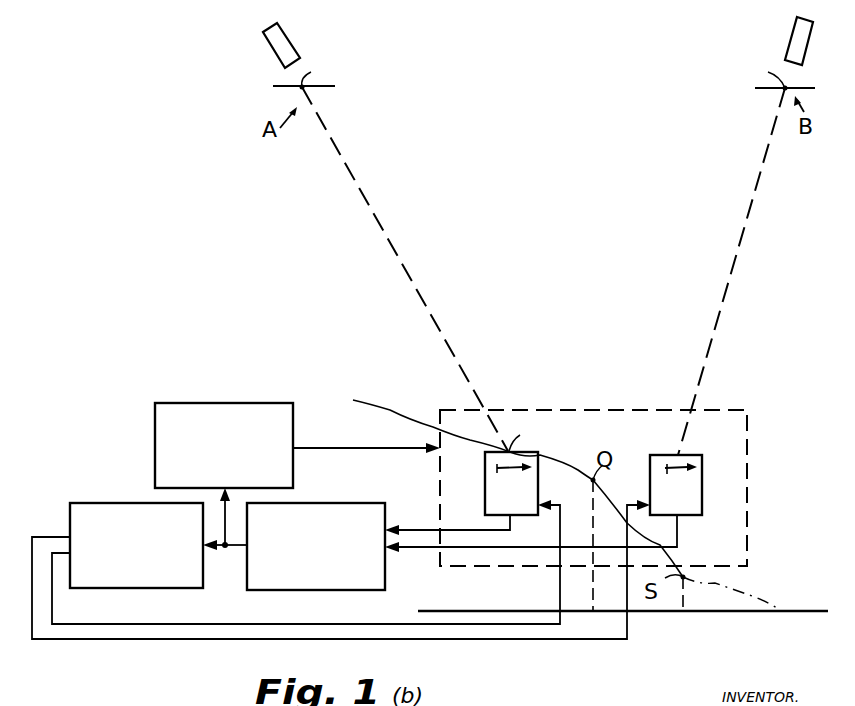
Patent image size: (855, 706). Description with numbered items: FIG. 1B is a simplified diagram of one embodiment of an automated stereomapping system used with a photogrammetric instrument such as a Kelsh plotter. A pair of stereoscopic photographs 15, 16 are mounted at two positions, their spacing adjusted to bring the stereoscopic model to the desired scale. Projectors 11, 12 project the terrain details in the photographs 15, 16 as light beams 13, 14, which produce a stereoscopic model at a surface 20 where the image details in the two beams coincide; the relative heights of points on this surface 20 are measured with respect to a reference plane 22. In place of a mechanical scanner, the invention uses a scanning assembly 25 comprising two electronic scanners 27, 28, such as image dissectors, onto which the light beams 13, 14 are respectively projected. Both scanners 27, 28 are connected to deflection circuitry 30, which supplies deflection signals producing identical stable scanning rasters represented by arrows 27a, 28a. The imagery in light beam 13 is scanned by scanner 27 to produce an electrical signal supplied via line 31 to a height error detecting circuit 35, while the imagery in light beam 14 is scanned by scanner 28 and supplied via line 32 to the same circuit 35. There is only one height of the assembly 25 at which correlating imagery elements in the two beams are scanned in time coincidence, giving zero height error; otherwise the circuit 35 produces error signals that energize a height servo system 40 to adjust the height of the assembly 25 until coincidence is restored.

The projector 11 is at (287, 38).
The projector 12 is at (808, 40).
The light beam 13 is at (373, 211).
The light beam 14 is at (745, 216).
The photograph 15 is at (328, 86).
The photograph 16 is at (806, 88).
The stereoscopic model surface 20 is at (366, 407).
The reference plane 22 is at (797, 610).
The scanning assembly 25 is at (748, 438).
The electronic scanner 27 is at (494, 464).
The scanning raster 27a is at (474, 470).
The electronic scanner 28 is at (695, 485).
The scanning raster 28a is at (713, 477).
The deflection circuitry 30 is at (117, 492).
The line 31 is at (409, 527).
The line 32 is at (430, 549).
The height error detecting circuit 35 is at (334, 503).
The servo system 40 is at (248, 403).